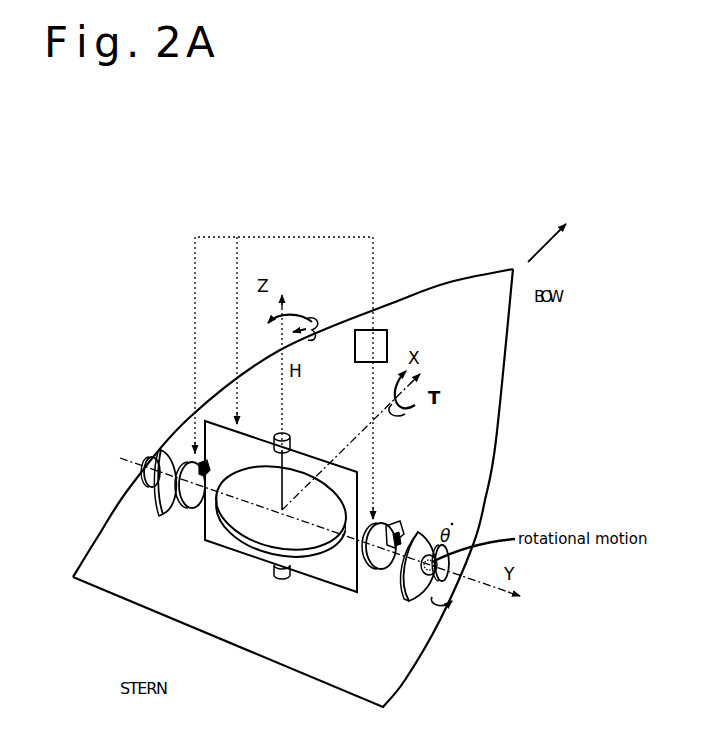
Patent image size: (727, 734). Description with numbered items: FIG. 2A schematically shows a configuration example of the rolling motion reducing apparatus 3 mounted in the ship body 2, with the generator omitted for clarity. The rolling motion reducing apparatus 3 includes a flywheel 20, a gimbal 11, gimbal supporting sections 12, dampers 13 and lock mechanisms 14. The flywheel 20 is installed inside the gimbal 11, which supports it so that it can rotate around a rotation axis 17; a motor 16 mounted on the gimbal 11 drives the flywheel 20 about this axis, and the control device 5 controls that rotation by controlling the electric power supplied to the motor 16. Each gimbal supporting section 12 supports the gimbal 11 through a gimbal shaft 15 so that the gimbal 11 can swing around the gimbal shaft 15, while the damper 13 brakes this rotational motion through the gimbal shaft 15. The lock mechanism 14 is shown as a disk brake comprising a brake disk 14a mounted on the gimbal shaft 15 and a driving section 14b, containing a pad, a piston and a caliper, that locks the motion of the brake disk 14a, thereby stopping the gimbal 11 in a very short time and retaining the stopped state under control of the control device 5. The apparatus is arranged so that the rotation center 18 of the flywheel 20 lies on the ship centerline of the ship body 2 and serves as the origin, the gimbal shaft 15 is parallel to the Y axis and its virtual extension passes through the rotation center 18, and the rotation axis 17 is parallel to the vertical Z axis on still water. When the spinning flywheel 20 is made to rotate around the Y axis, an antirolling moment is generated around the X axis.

The ship body 2 is at (450, 281).
The rolling motion reducing apparatus 3 is at (283, 641).
The control device 5 is at (388, 335).
The gimbal 11 is at (305, 455).
The gimbal supporting section 12 is at (410, 611).
The damper 13 is at (152, 478).
The lock mechanism 14 is at (188, 514).
The brake disk 14a is at (389, 524).
The driving section 14b is at (395, 531).
The gimbal shaft 15 is at (405, 552).
The motor 16 is at (276, 436).
The rotation axis 17 is at (272, 500).
The rotation center 18 is at (268, 520).
The flywheel 20 is at (257, 468).